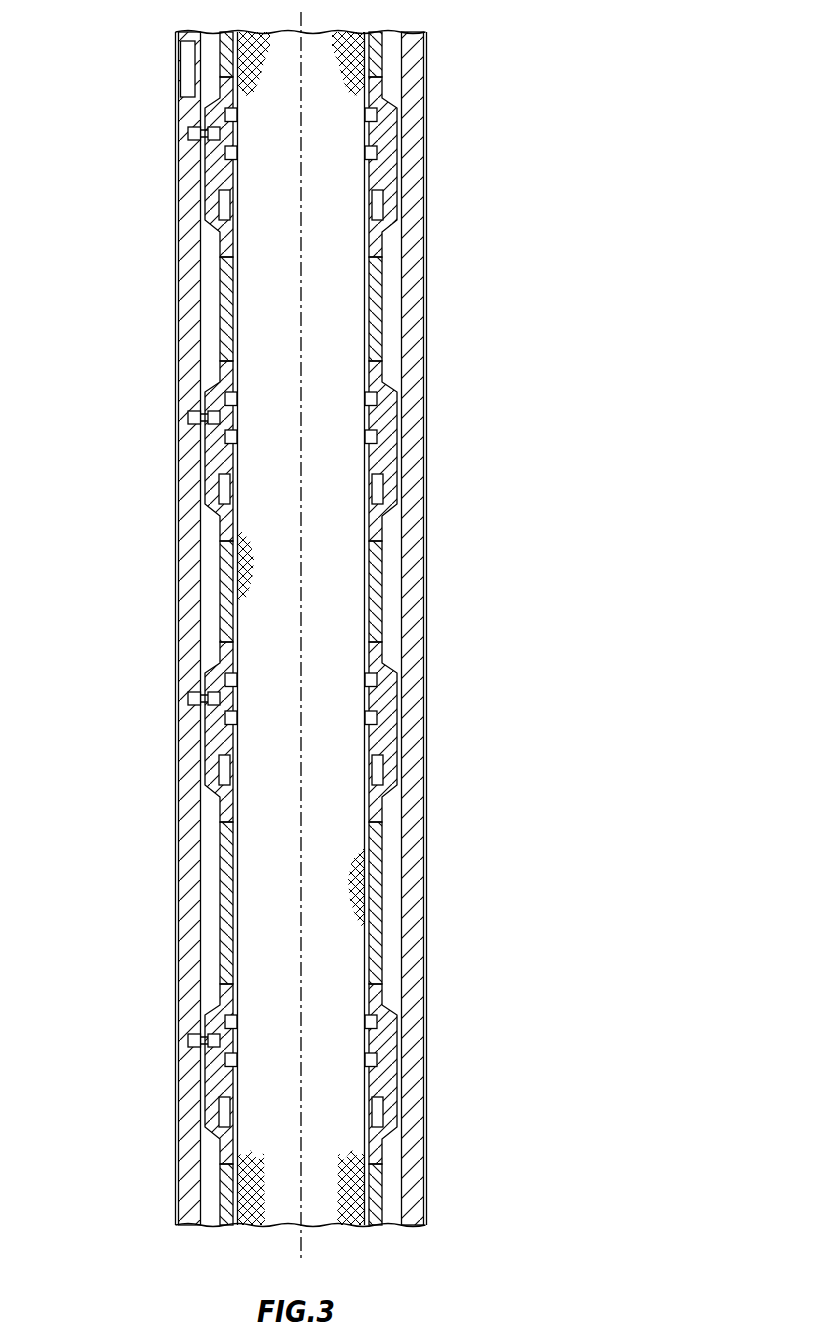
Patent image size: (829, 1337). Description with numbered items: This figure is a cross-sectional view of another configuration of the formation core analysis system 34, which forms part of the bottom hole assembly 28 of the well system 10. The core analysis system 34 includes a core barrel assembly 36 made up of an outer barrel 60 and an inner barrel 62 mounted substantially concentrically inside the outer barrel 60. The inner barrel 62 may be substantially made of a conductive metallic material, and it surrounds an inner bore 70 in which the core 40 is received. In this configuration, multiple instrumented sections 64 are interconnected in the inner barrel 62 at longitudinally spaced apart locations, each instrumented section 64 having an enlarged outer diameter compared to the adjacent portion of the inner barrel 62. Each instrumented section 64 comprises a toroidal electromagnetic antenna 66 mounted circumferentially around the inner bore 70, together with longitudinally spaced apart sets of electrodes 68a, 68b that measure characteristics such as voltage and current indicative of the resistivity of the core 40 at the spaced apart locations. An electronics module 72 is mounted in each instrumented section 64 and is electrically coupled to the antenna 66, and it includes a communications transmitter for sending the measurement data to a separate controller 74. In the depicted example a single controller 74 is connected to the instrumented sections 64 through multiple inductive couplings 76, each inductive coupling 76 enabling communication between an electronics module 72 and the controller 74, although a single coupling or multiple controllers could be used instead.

The well system 10 is at (625, 55).
The bottom hole assembly 28 is at (140, 60).
The formation core analysis system 34 is at (436, 548).
The core barrel assembly 36 is at (167, 961).
The core 40 is at (237, 328).
The outer barrel 60 is at (427, 880).
The inner barrel 62 is at (393, 313).
The instrumented section 64 is at (406, 175).
The toroidal electromagnetic antenna 66 is at (384, 205).
The electrode 68a is at (378, 115).
The electrode 68b is at (378, 152).
The inner bore 70 is at (368, 299).
The electronics module 72 is at (237, 136).
The controller 74 is at (177, 76).
The inductive coupling 76 is at (188, 135).